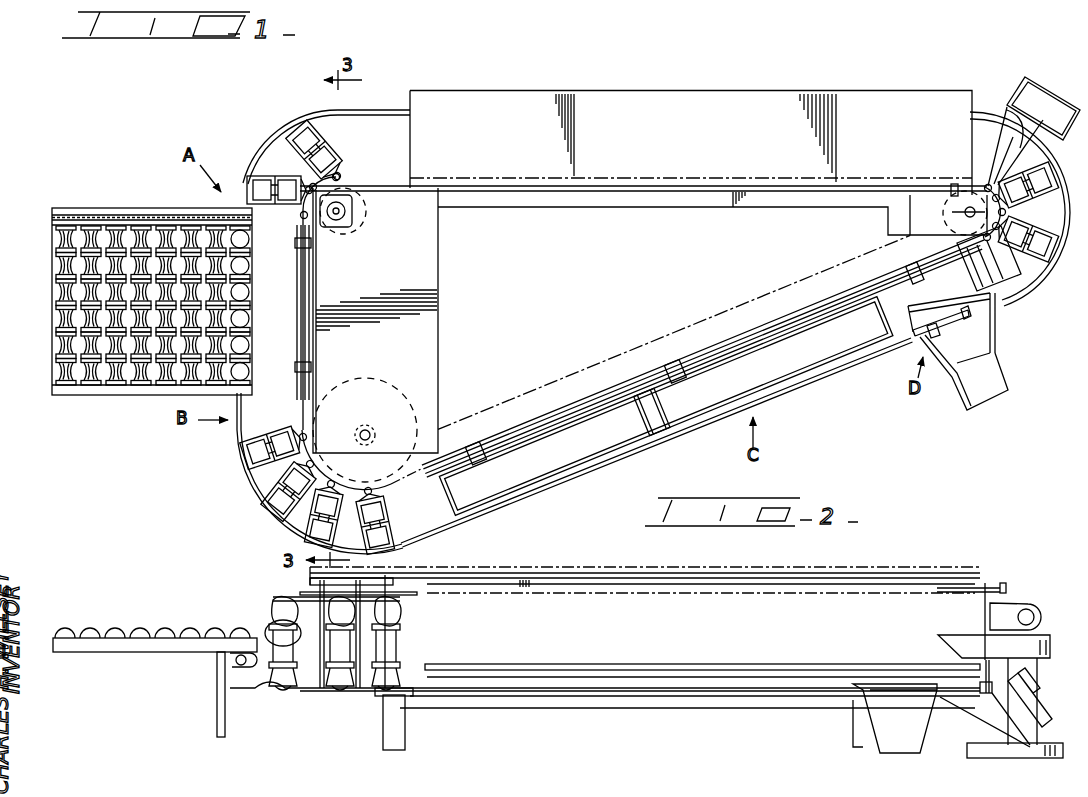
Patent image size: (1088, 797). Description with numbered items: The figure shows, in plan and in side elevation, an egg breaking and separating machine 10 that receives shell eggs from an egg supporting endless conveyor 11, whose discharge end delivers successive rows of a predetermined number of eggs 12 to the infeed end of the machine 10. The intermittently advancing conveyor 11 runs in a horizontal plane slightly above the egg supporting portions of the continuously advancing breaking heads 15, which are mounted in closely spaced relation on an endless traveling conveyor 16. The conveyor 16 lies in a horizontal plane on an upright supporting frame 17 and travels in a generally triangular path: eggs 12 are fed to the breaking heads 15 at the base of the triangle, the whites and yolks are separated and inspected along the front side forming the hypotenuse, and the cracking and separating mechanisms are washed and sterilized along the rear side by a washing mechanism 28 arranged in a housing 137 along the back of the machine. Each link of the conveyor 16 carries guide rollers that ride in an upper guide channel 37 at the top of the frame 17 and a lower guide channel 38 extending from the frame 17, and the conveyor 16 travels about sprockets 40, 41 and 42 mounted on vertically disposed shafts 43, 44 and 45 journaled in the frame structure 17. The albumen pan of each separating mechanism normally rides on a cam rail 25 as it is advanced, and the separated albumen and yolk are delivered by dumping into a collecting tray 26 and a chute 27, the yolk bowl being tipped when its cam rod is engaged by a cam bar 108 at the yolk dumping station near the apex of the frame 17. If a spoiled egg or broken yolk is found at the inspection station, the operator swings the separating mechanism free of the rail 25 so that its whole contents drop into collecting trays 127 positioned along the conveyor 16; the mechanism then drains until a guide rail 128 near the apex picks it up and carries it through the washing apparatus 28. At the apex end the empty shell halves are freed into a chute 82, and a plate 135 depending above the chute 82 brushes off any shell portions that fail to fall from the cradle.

In FIG. 1, the egg breaking and separating machine 10 is at (938, 80).
In FIG. 1, the endless conveyor 11 is at (160, 214).
In FIG. 2, the endless conveyor 11 is at (187, 650).
In FIG. 1, the eggs 12 is at (245, 296).
In FIG. 2, the eggs 12 is at (224, 630).
In FIG. 1, the breaking heads 15 is at (246, 180).
In FIG. 2, the breaking heads 15 is at (273, 600).
In FIG. 1, the endless traveling conveyor 16 is at (368, 185).
In FIG. 1, the upright supporting frame 17 is at (613, 360).
In FIG. 2, the upright supporting frame 17 is at (690, 578).
In FIG. 1, the cam rail 25 is at (786, 392).
In FIG. 1, the collecting tray 26 is at (1027, 283).
In FIG. 2, the collecting tray 26 is at (975, 753).
In FIG. 1, the chute 27 is at (1005, 356).
In FIG. 2, the chute 27 is at (890, 728).
In FIG. 1, the washing mechanism 28 is at (822, 94).
In FIG. 1, the guide channel 37 is at (299, 298).
In FIG. 2, the guide channel 37 is at (588, 580).
In FIG. 1, the guide channel 38 is at (503, 428).
In FIG. 2, the guide channel 38 is at (535, 695).
In FIG. 1, the sprocket 40 is at (955, 186).
In FIG. 1, the sprocket 41 is at (366, 213).
In FIG. 1, the sprocket 42 is at (392, 390).
In FIG. 1, the shaft 43 is at (946, 228).
In FIG. 1, the shaft 44 is at (337, 214).
In FIG. 1, the shaft 45 is at (370, 436).
In FIG. 1, the chute 82 is at (1055, 95).
In FIG. 1, the cam bar 108 is at (912, 340).
In FIG. 1, the collecting trays 127 is at (584, 460).
In FIG. 1, the guide rail 128 is at (962, 275).
In FIG. 2, the guide rail 128 is at (997, 693).
In FIG. 1, the plate 135 is at (1006, 113).
In FIG. 1, the housing 137 is at (920, 102).